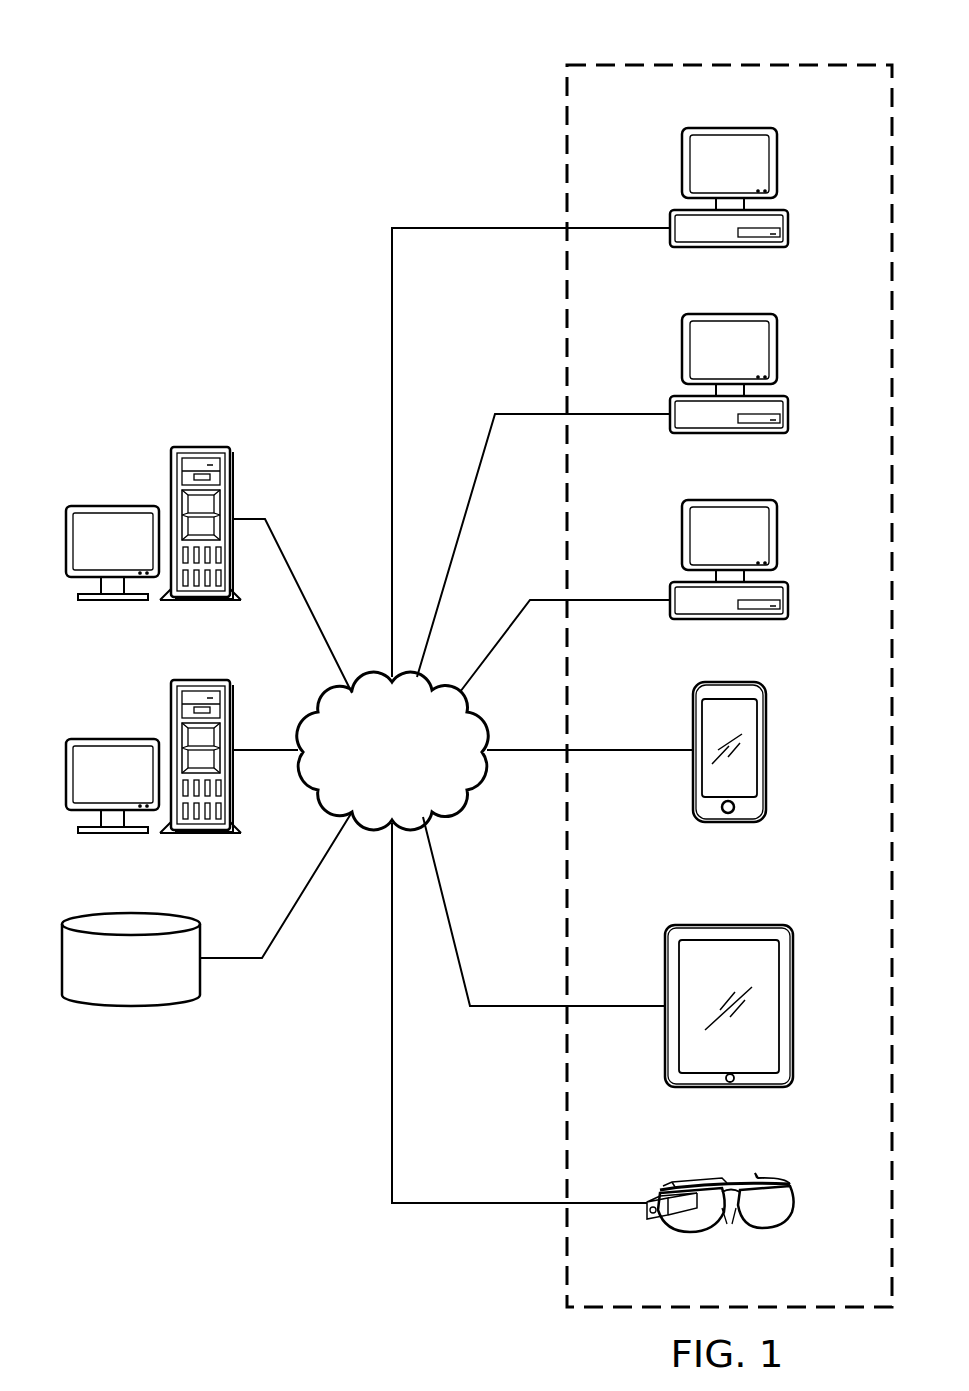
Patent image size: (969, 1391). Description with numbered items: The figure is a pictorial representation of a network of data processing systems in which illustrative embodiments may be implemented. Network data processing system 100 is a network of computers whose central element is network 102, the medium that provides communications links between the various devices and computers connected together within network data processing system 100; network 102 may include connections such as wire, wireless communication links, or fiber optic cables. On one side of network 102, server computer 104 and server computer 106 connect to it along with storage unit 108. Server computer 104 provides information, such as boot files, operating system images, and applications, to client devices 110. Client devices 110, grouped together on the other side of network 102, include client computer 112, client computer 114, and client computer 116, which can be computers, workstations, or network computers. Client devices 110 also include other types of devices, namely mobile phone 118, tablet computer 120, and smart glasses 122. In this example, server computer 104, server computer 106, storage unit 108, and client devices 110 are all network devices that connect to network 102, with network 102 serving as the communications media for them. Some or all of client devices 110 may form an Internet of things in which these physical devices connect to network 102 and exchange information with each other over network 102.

The network data processing system 100 is at (252, 318).
The network 102 is at (370, 784).
The server computer 104 is at (112, 505).
The server computer 106 is at (112, 738).
The storage unit 108 is at (130, 1008).
The client devices 110 is at (801, 58).
The client computer 112 is at (777, 163).
The client computer 114 is at (777, 349).
The client computer 116 is at (777, 535).
The mobile phone 118 is at (766, 767).
The tablet computer 120 is at (793, 1017).
The smart glasses 122 is at (795, 1208).